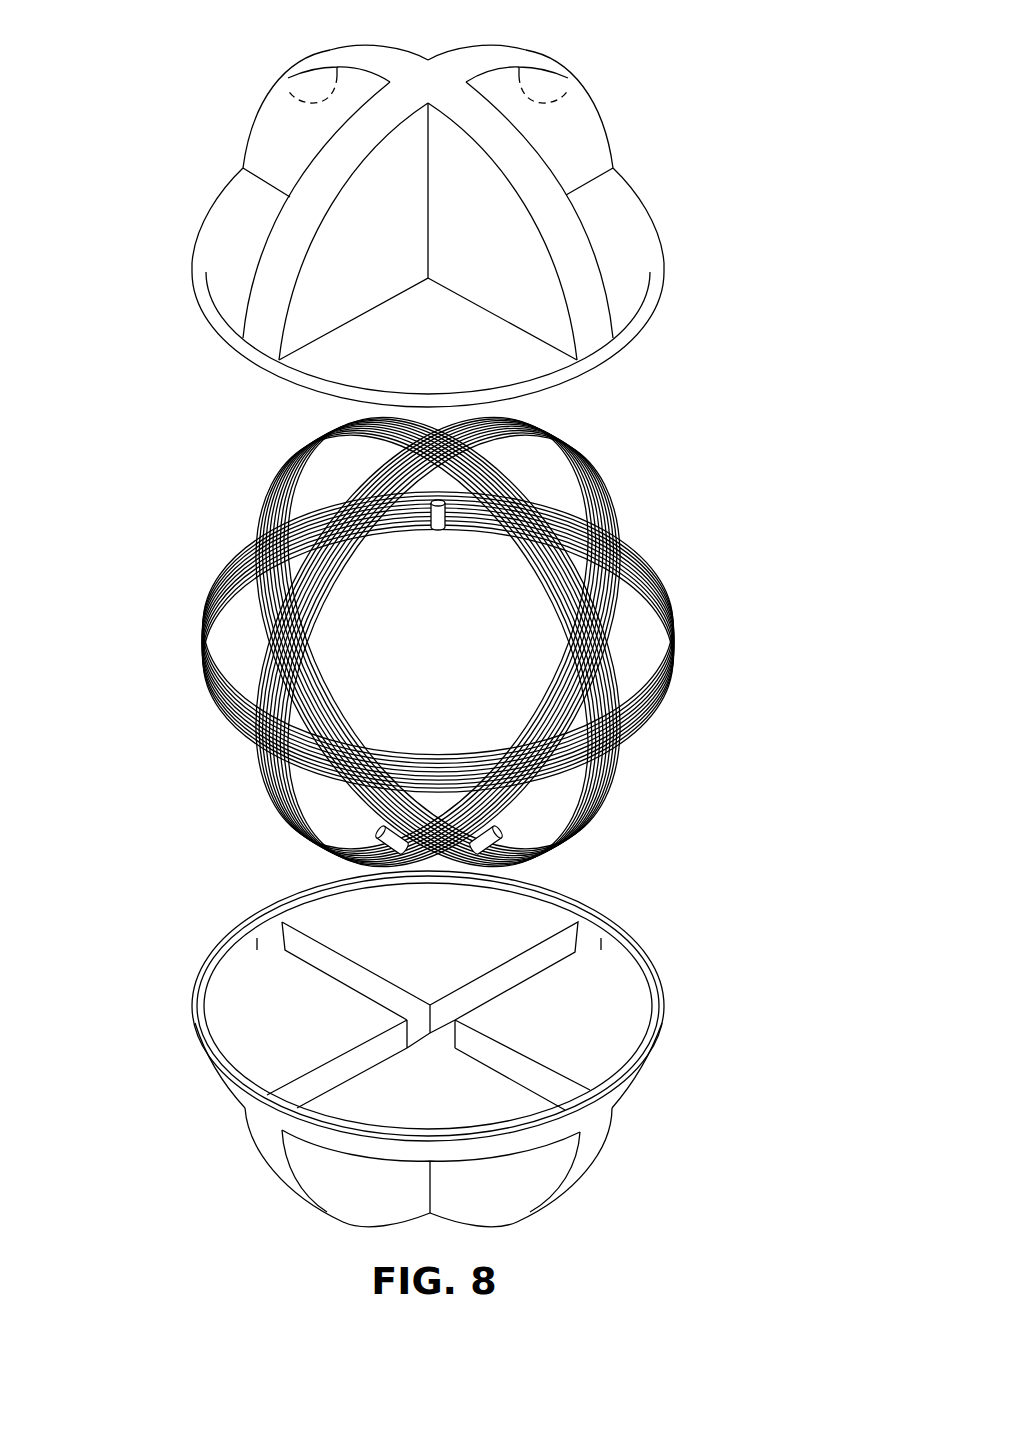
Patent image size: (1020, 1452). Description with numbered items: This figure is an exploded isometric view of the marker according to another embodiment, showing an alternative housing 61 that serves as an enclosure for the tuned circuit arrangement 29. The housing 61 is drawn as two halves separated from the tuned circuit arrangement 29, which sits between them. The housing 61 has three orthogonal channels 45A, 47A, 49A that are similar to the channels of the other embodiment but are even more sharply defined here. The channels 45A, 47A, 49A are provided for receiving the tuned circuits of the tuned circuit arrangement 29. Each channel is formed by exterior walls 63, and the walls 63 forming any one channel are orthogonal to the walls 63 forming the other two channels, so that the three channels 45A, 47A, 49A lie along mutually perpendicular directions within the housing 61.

The tuned circuit arrangement 29 is at (705, 633).
The channel 45A is at (563, 100).
The channel 47A is at (290, 100).
The channel 49A is at (553, 900).
The housing 61 is at (645, 318).
The exterior walls 63 is at (518, 252).